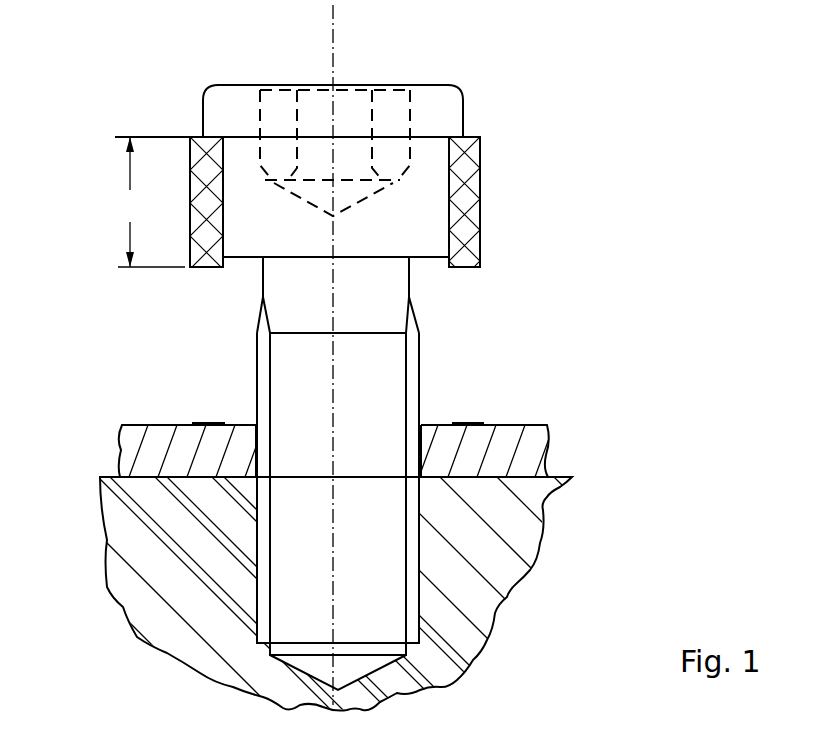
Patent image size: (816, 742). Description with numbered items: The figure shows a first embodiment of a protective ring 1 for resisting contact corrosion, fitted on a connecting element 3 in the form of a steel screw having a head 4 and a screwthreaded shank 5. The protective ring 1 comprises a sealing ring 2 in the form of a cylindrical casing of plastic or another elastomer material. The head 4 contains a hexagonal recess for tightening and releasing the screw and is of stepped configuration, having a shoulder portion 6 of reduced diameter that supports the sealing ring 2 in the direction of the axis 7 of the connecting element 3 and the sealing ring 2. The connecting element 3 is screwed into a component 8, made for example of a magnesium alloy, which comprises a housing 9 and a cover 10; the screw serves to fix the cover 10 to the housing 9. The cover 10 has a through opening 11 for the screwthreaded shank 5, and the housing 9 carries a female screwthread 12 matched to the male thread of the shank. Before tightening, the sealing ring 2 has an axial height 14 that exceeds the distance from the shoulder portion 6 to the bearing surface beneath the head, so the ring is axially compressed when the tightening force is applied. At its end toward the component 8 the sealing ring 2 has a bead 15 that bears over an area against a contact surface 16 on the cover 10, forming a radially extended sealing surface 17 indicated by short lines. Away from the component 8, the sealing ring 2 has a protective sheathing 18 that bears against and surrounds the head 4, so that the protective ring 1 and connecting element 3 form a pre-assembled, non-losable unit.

The protective ring 1 is at (520, 184).
The sealing ring 2 is at (468, 213).
The connecting element 3 is at (427, 74).
The head 4 is at (422, 162).
The screwthreaded shank 5 is at (375, 367).
The shoulder portion 6 is at (240, 136).
The axis 7 is at (333, 33).
The component 8 is at (595, 491).
The housing 9 is at (497, 530).
The cover 10 is at (520, 437).
The through opening 11 is at (312, 457).
The female screwthread 12 is at (265, 538).
The axial height 14 is at (149, 202).
The bead 15 is at (465, 263).
The contact surface 16 is at (437, 421).
The sealing surface 17 is at (208, 422).
The protective sheathing 18 is at (462, 168).